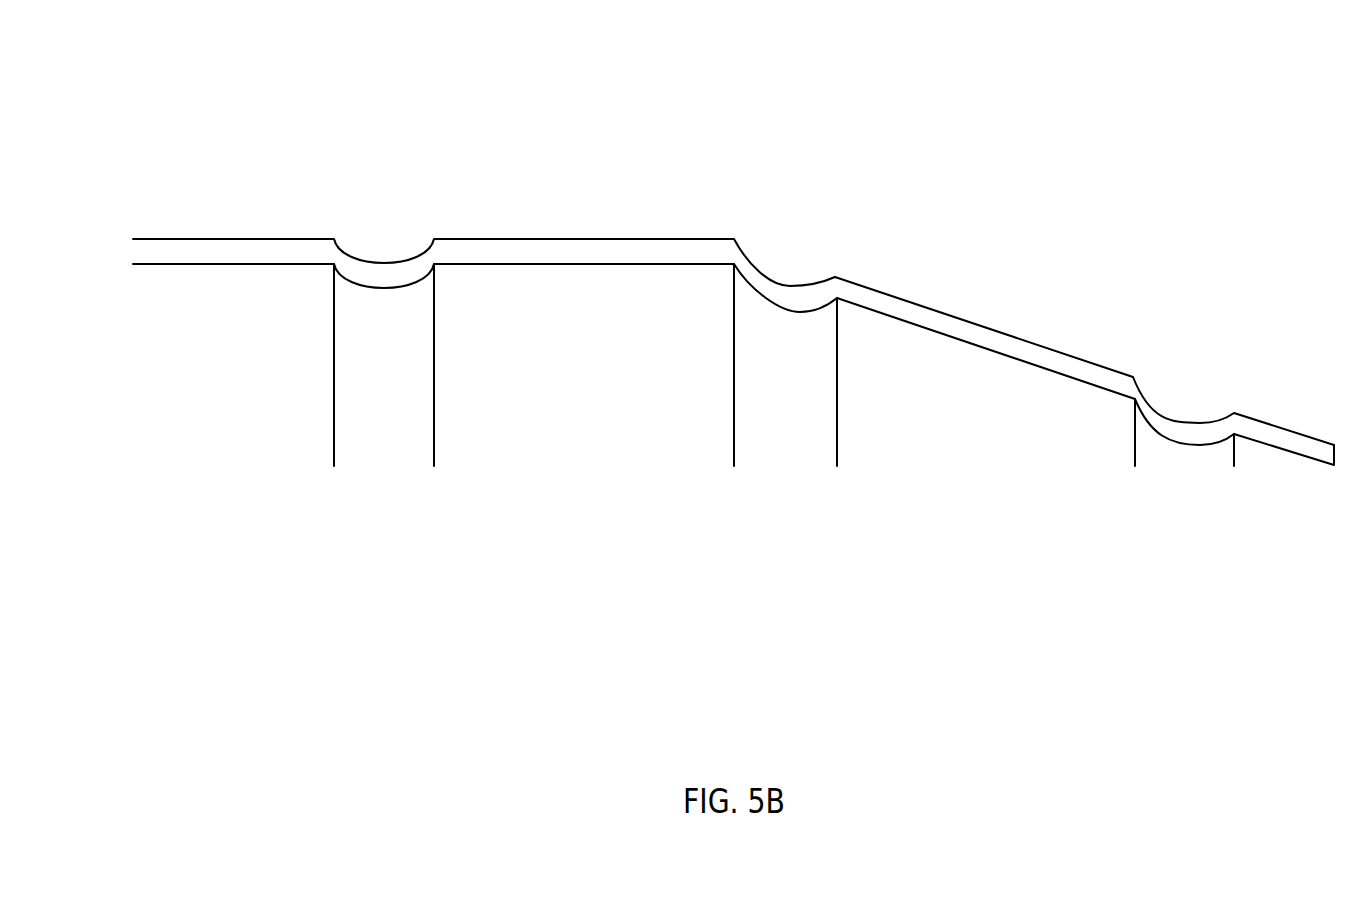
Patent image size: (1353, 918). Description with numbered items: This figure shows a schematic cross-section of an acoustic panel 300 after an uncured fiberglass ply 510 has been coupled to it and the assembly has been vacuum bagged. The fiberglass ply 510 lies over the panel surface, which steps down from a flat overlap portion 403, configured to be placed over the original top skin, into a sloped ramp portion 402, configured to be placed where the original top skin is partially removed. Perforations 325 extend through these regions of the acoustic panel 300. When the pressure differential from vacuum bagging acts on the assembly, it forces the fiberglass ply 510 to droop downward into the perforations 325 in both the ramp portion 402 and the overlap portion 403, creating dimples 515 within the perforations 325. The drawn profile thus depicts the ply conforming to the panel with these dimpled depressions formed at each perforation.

The acoustic panel 300 is at (733, 342).
The fiberglass ply 510 is at (623, 238).
The dimples 515 is at (783, 310).
The perforations 325 is at (734, 371).
The overlap portion 403 is at (509, 485).
The ramp portion 402 is at (1033, 485).